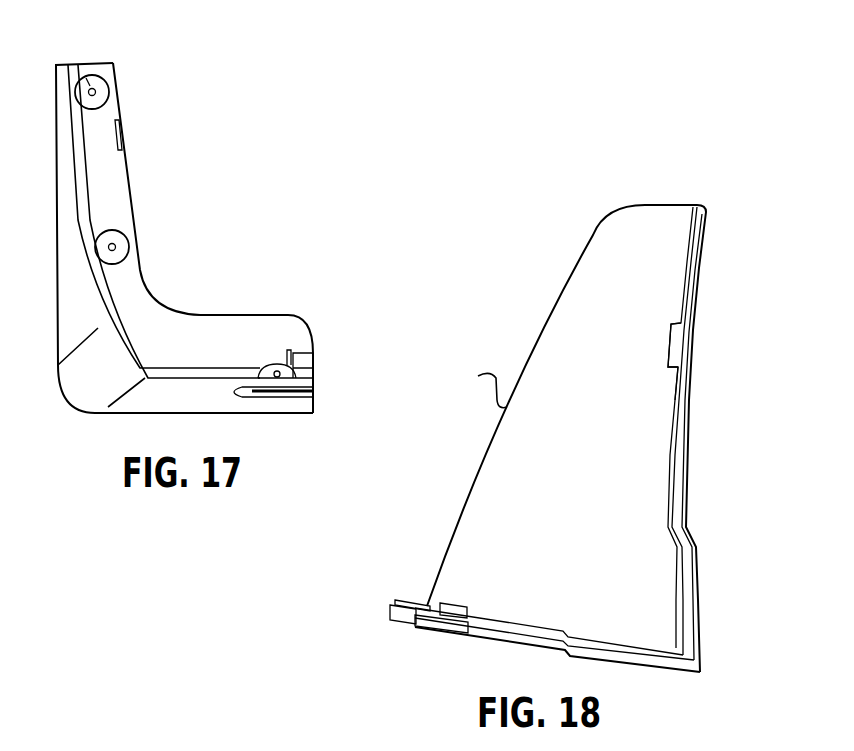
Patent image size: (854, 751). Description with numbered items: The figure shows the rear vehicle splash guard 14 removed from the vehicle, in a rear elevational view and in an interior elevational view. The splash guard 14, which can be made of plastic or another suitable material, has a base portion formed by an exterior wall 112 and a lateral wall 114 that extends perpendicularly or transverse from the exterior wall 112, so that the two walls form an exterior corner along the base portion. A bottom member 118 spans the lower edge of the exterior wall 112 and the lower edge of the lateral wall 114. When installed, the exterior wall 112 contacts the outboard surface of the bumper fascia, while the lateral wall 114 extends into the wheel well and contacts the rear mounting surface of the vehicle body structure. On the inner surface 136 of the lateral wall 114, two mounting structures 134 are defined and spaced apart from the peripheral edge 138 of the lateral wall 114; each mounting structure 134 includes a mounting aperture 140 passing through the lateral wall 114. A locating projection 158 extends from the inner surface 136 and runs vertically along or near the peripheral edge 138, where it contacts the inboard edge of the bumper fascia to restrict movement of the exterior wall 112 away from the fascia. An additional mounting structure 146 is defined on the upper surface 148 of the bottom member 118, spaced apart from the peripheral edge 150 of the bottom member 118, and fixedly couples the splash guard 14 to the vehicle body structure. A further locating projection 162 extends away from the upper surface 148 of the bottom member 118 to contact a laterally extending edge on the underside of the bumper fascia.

In FIG. 17, the rear vehicle splash guard 14 is at (240, 174).
In FIG. 18, the rear vehicle splash guard 14 is at (529, 277).
In FIG. 17, the exterior wall 112 is at (55, 288).
In FIG. 18, the exterior wall 112 is at (566, 405).
In FIG. 17, the lateral wall 114 is at (168, 327).
In FIG. 18, the lateral wall 114 is at (685, 507).
In FIG. 17, the bottom member 118 is at (283, 407).
In FIG. 18, the bottom member 118 is at (635, 665).
In FIG. 17, the mounting structure 134 is at (88, 83).
In FIG. 18, the mounting structure 134 is at (683, 272).
In FIG. 17, the inner surface 136 is at (133, 290).
In FIG. 18, the inner surface 136 is at (677, 390).
In FIG. 17, the peripheral edge 138 is at (128, 178).
In FIG. 18, the peripheral edge 138 is at (678, 468).
In FIG. 17, the mounting aperture 140 is at (100, 90).
In FIG. 17, the additional mounting structure 146 is at (268, 364).
In FIG. 18, the additional mounting structure 146 is at (405, 615).
In FIG. 18, the upper surface 148 is at (427, 606).
In FIG. 18, the peripheral edge 150 is at (450, 625).
In FIG. 17, the locating projection 158 is at (122, 135).
In FIG. 18, the locating projection 158 is at (672, 348).
In FIG. 17, the locating projection 162 is at (295, 353).
In FIG. 18, the locating projection 162 is at (460, 607).